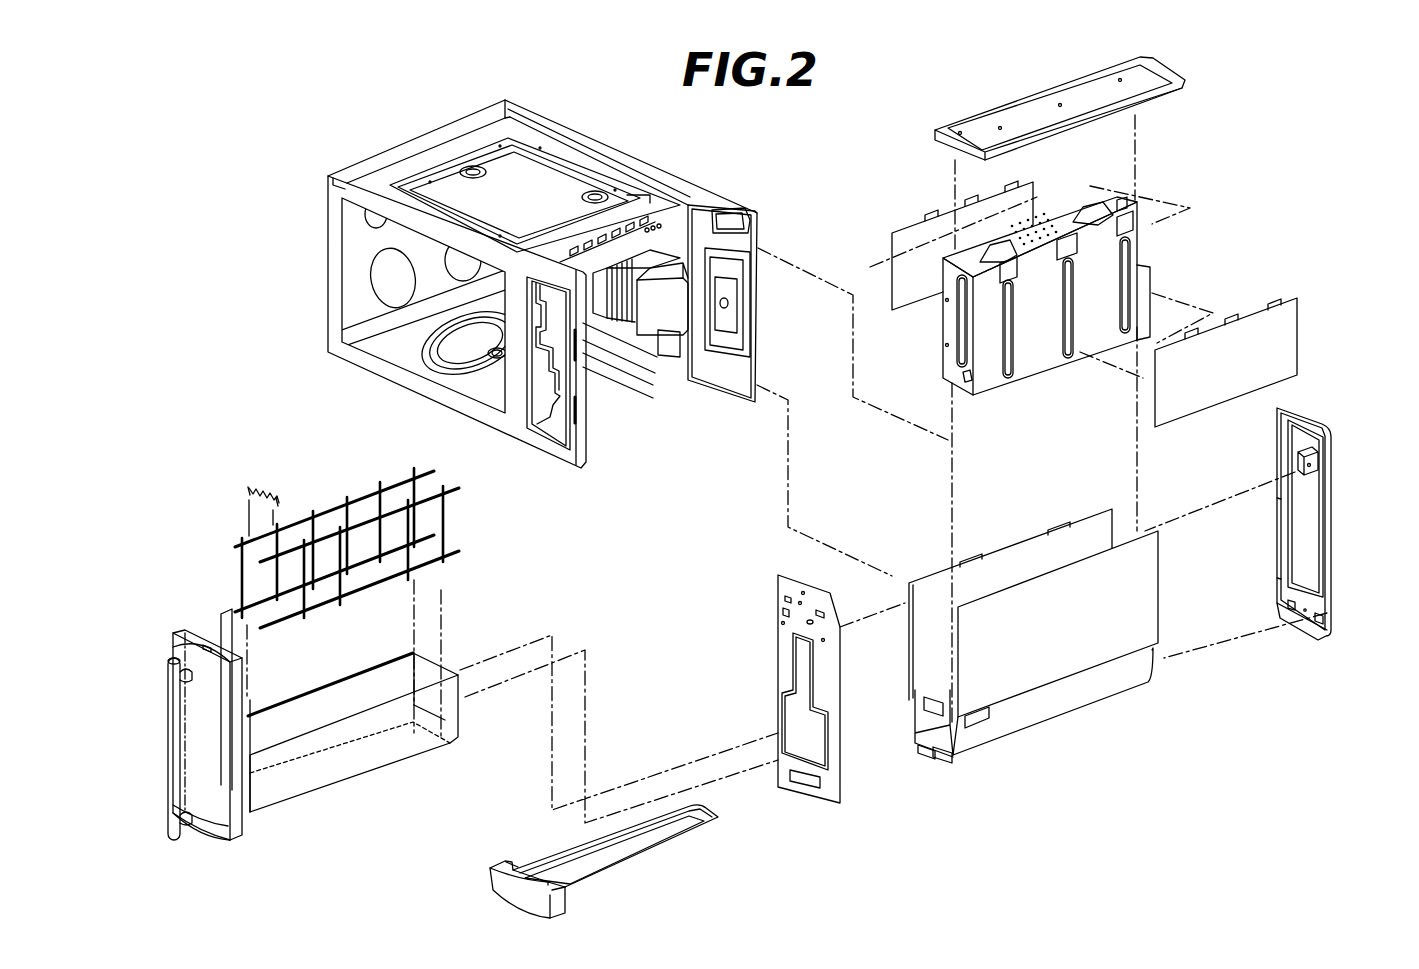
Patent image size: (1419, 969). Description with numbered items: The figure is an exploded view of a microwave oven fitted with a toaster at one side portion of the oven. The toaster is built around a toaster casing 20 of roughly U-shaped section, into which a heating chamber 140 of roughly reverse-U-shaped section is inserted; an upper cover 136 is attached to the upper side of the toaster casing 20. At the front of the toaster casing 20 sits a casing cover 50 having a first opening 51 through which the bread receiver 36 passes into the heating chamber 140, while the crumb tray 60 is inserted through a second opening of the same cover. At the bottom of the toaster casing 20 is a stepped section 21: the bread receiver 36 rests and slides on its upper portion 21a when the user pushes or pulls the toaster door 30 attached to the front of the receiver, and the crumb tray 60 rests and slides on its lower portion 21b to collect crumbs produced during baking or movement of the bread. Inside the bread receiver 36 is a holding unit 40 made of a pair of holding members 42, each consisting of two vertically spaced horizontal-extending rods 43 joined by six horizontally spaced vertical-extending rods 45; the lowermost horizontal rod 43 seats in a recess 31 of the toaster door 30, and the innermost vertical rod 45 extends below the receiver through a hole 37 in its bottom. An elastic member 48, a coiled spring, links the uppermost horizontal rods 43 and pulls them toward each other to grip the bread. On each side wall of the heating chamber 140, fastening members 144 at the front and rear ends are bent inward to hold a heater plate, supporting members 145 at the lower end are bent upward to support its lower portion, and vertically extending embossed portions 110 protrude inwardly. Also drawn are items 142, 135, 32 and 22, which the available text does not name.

The upper cover 136 is at (1163, 97).
The side insulation panel 142 is at (903, 235).
The heating chamber 140 is at (1065, 323).
The fastening members 144 is at (940, 342).
The supporting members 145 is at (968, 380).
The embossed portions 110 is at (1012, 378).
The rear plate 135 is at (1330, 527).
The holding unit 40 is at (340, 519).
The holding members 42 is at (398, 478).
The horizontal-extending rods 43 is at (455, 493).
The vertical-extending rods 45 is at (237, 576).
The elastic member 48 is at (258, 486).
The toaster door 30 is at (165, 723).
The recess 31 is at (201, 794).
The handle rod 32 is at (173, 724).
The bread receiver 36 is at (353, 753).
The hole 37 is at (437, 733).
The crumb tray 60 is at (632, 845).
The casing cover 50 is at (803, 724).
The first opening 51 is at (805, 750).
The toaster casing 20 is at (1005, 683).
The stepped section 21 is at (916, 773).
The upper portion 21a is at (909, 700).
The lower portion 21b is at (937, 760).
The opening 22 is at (928, 699).